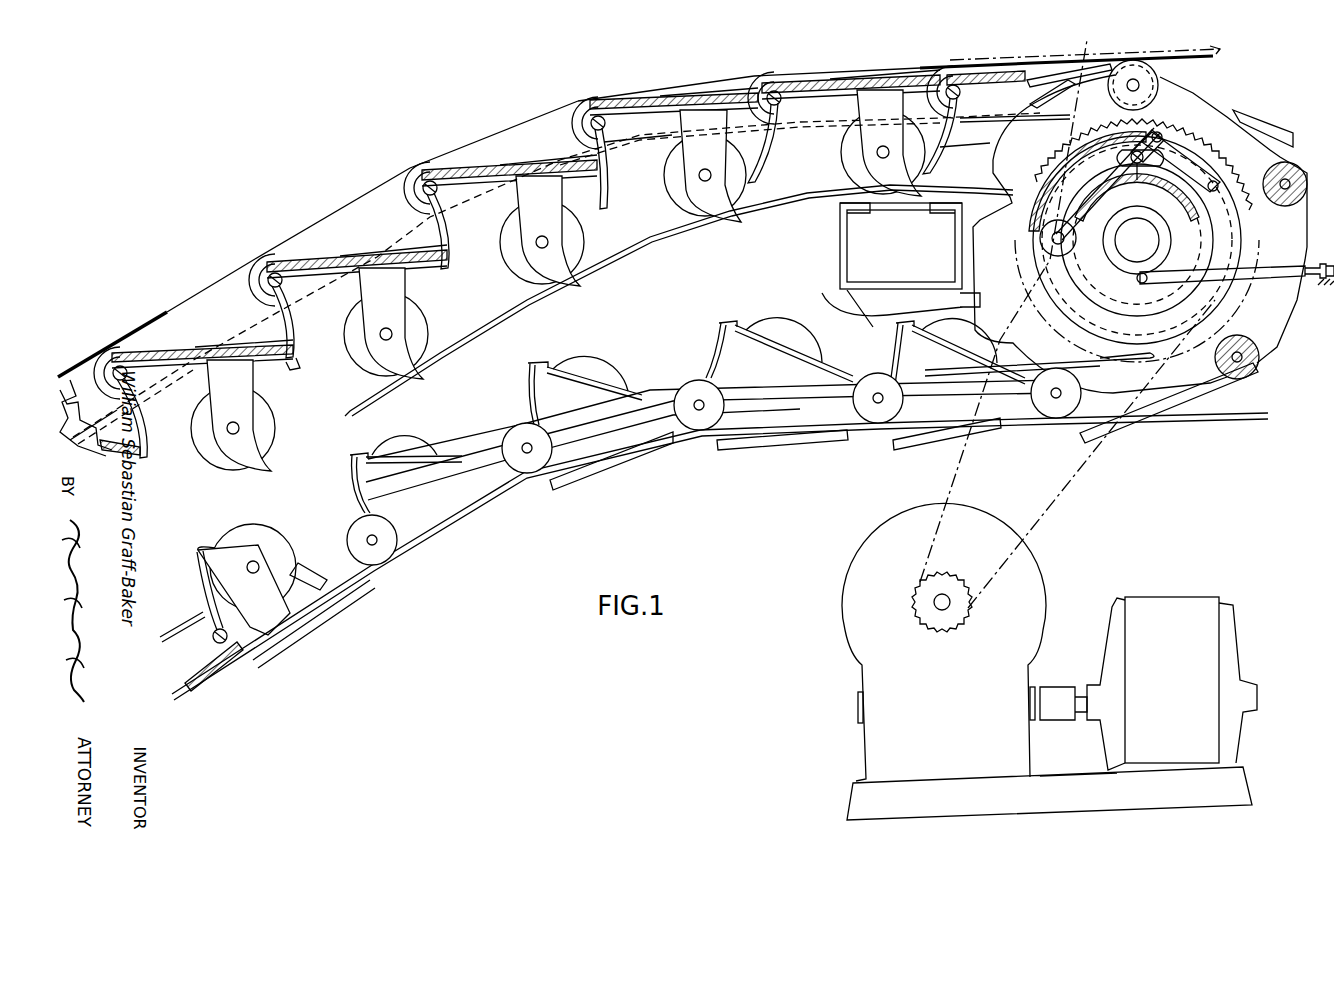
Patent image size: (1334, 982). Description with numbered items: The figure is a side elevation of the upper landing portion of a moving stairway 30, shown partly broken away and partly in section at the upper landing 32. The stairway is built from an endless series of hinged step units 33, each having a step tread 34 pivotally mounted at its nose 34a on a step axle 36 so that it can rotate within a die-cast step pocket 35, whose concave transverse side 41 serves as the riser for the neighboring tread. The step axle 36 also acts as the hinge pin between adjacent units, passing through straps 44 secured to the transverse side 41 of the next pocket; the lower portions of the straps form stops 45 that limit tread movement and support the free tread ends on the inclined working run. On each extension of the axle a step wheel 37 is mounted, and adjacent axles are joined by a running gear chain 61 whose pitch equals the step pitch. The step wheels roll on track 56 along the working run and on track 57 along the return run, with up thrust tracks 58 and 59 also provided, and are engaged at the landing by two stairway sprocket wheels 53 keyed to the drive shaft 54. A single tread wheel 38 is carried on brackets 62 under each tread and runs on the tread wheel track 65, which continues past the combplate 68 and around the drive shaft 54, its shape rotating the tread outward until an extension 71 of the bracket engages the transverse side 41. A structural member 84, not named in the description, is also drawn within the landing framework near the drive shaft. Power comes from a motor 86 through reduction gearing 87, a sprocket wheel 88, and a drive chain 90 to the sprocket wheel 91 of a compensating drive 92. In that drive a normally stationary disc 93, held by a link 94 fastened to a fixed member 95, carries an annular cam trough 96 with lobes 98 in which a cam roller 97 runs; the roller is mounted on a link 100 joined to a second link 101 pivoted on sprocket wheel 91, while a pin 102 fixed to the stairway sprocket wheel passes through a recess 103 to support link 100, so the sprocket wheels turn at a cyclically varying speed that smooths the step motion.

The moving stairway 30 is at (489, 114).
The upper landing 32 is at (1150, 50).
The step unit 33 is at (860, 73).
The step tread 34 is at (190, 352).
The nose 34a is at (262, 262).
The step pocket 35 is at (217, 308).
The step axle 36 is at (128, 380).
The step wheel 37 is at (1160, 75).
The tread wheel 38 is at (274, 441).
The transverse side 41 is at (130, 448).
The strap 44 is at (147, 440).
The stop 45 is at (292, 362).
The stairway sprocket wheel 53 is at (1225, 107).
The drive shaft 54 is at (1137, 240).
The track 56 is at (95, 440).
The track 57 is at (178, 694).
The up thrust track 58 is at (78, 364).
The up thrust track 59 is at (190, 626).
The running gear chain 61 is at (90, 400).
The bracket 62 is at (308, 575).
The tread wheel track 65 is at (688, 220).
The combplate 68 is at (1040, 70).
The extension 71 is at (203, 546).
The channel frame 84 is at (845, 245).
The motor 86 is at (1172, 683).
The reduction gearing 87 is at (1047, 661).
The sprocket wheel 88 is at (950, 577).
The drive chain 90 is at (1100, 455).
The sprocket wheel 91 is at (1160, 132).
The compensating drive 92 is at (1044, 205).
The disc 93 is at (1137, 240).
The link 94 is at (1212, 270).
The fixed member 95 is at (1320, 262).
The annular cam trough 96 is at (1078, 303).
The cam roller 97 is at (1060, 257).
The lobe 98 is at (1201, 233).
The link 100 is at (1106, 183).
The second link 101 is at (1195, 160).
The pin 102 is at (1140, 180).
The recess 103 is at (1120, 162).